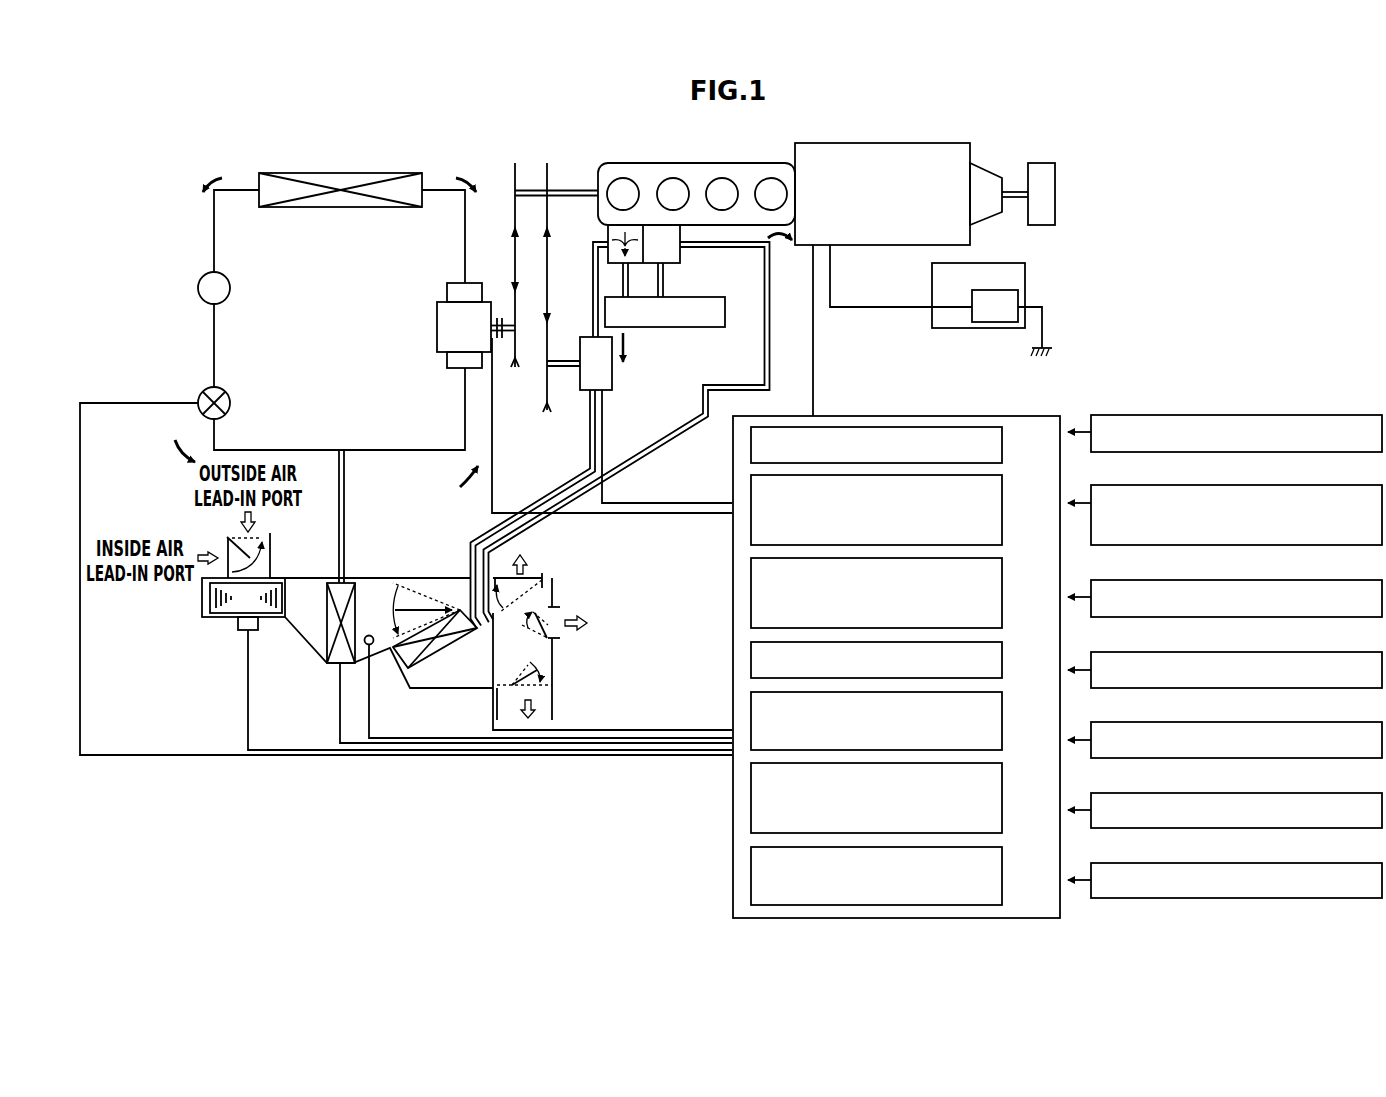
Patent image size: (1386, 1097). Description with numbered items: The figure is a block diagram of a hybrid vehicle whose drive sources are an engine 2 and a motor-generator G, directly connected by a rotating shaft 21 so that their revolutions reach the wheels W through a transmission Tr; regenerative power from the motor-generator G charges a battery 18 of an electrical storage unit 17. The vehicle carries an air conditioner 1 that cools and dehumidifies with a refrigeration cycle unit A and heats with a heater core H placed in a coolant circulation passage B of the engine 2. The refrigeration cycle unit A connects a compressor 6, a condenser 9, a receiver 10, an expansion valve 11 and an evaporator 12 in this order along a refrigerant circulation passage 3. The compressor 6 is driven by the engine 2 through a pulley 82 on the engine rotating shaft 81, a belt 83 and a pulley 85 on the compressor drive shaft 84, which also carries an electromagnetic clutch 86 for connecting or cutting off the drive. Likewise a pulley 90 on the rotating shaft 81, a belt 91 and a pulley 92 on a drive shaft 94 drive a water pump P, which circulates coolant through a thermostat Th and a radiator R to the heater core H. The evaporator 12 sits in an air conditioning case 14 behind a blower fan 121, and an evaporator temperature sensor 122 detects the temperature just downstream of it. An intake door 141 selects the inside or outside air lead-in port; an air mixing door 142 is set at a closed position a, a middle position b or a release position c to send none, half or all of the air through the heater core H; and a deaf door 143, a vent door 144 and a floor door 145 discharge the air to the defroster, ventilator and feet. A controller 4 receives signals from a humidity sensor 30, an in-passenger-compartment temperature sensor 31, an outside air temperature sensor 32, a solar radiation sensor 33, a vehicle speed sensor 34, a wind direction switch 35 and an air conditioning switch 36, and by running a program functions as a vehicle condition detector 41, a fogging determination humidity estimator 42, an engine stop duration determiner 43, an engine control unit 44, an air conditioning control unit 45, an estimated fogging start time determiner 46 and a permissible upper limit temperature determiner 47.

The air conditioner 1 is at (197, 150).
The engine 2 is at (641, 163).
The refrigerant circulation passage 3 is at (410, 448).
The controller 4 is at (1040, 416).
The compressor 6 is at (437, 328).
The condenser 9 is at (341, 173).
The receiver 10 is at (200, 280).
The expansion valve 11 is at (200, 395).
The evaporator 12 is at (327, 645).
The air conditioning case 14 is at (314, 578).
The electrical storage unit 17 is at (1025, 277).
The battery 18 is at (1005, 323).
The rotating shaft 21 is at (1014, 199).
The humidity sensor 30 is at (1348, 415).
The in-passenger-compartment temperature sensor 31 is at (1348, 485).
The outside air temperature sensor 32 is at (1348, 580).
The solar radiation sensor 33 is at (1348, 652).
The vehicle speed sensor 34 is at (1348, 722).
The wind direction switch 35 is at (1348, 793).
The air conditioning switch 36 is at (1348, 863).
The vehicle condition detector 41 is at (1003, 446).
The fogging determination humidity estimator 42 is at (1003, 513).
The engine stop duration determiner 43 is at (1003, 599).
The engine control unit 44 is at (1003, 661).
The air conditioning control unit 45 is at (1003, 713).
The estimated fogging start time determiner 46 is at (1003, 801).
The permissible upper limit temperature determiner 47 is at (1003, 866).
The rotating shaft 81 is at (574, 190).
The pulley 82 is at (515, 162).
The belt 83 is at (513, 257).
The drive shaft 84 is at (510, 330).
The pulley 85 is at (514, 370).
The electromagnetic clutch 86 is at (498, 317).
The pulley 90 is at (547, 162).
The belt 91 is at (549, 261).
The pulley 92 is at (549, 326).
The drive shaft 94 is at (589, 400).
The blower fan 121 is at (240, 634).
The evaporator temperature sensor 122 is at (374, 650).
The intake door 141 is at (256, 546).
The air mixing door 142 is at (418, 592).
The deaf door 143 is at (530, 572).
The vent door 144 is at (548, 622).
The floor door 145 is at (526, 674).
The refrigeration cycle unit A is at (433, 172).
The coolant circulation passage B is at (757, 363).
The motor-generator G is at (858, 143).
The transmission Tr is at (986, 170).
The wheels W is at (1042, 163).
The thermostat Th is at (608, 234).
The radiator R is at (664, 328).
The water pump P is at (610, 391).
The heater core H is at (440, 650).
The closed position a is at (386, 640).
The middle position b is at (382, 610).
The release position c is at (390, 586).